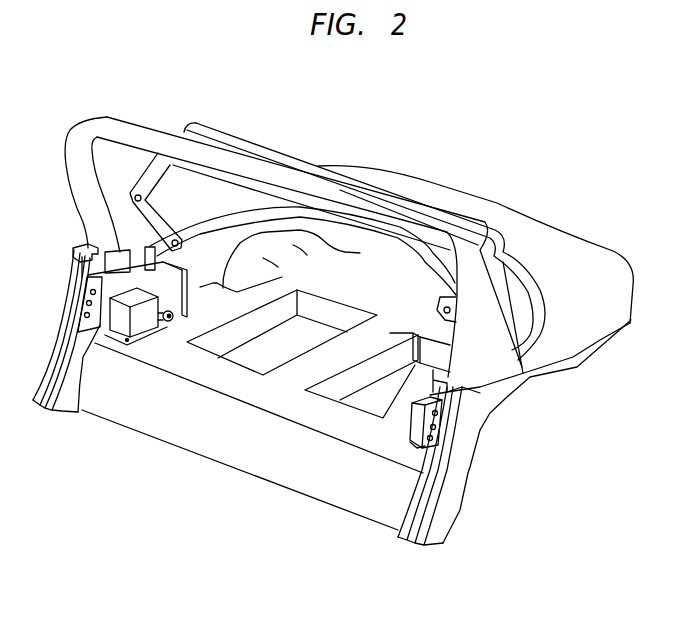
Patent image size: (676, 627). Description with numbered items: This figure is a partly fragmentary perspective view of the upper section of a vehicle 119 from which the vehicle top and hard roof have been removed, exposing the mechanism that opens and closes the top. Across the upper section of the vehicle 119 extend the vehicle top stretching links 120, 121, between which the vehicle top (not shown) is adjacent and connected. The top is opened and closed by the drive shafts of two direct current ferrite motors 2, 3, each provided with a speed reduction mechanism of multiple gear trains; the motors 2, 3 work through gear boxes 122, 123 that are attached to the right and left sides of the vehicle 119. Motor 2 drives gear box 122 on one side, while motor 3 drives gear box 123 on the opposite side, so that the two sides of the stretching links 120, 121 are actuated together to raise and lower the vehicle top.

The vehicle top stretching link 120 is at (262, 143).
The vehicle top stretching link 121 is at (219, 222).
The gear box 122 is at (143, 320).
The motor 2 is at (180, 318).
The motor 3 is at (410, 338).
The gear box 123 is at (413, 423).
The vehicle 119 is at (480, 500).